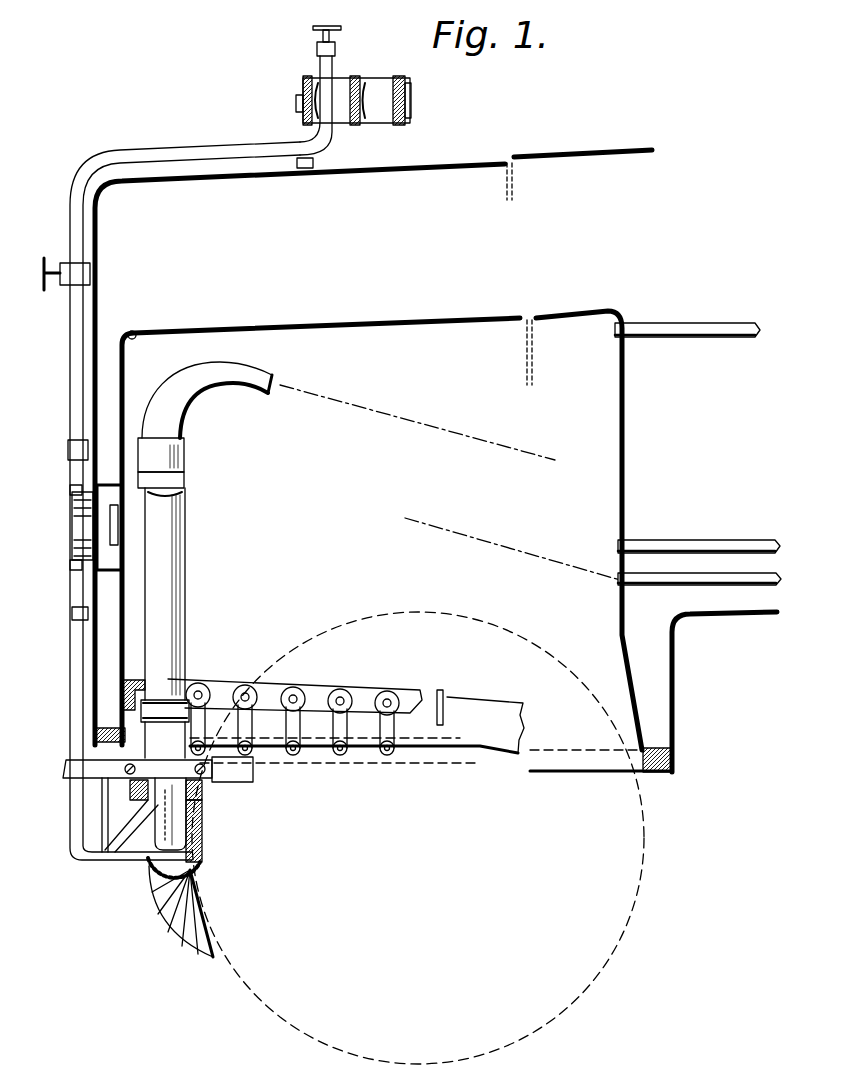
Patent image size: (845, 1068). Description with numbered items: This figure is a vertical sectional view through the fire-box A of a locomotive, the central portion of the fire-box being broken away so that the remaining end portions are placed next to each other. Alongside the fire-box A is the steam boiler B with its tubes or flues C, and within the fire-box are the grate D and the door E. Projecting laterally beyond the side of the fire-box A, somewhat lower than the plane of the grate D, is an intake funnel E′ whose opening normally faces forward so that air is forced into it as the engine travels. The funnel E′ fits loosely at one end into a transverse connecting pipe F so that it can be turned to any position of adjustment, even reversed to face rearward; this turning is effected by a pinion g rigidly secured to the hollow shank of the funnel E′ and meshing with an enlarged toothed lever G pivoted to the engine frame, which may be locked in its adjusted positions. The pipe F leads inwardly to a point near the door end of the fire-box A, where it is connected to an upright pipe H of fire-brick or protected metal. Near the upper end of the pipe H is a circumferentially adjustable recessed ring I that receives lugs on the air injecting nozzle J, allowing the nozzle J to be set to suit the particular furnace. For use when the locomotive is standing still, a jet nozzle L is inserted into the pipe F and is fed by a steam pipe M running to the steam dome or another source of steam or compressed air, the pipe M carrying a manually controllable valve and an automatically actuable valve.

The fire-box A is at (450, 482).
The steam boiler B is at (436, 607).
The tubes or flues C is at (700, 323).
The fire-box grate D is at (322, 692).
The door of the fire-box E is at (85, 528).
The intake funnel E′ is at (162, 895).
The transverse connecting pipe F is at (202, 800).
The toothed lever G is at (142, 800).
The upright pipe H is at (180, 612).
The recessed ring I is at (186, 479).
The air injecting nozzle J is at (198, 398).
The jet nozzle L is at (176, 832).
The steam pipe M is at (197, 152).
The pinion g is at (196, 850).